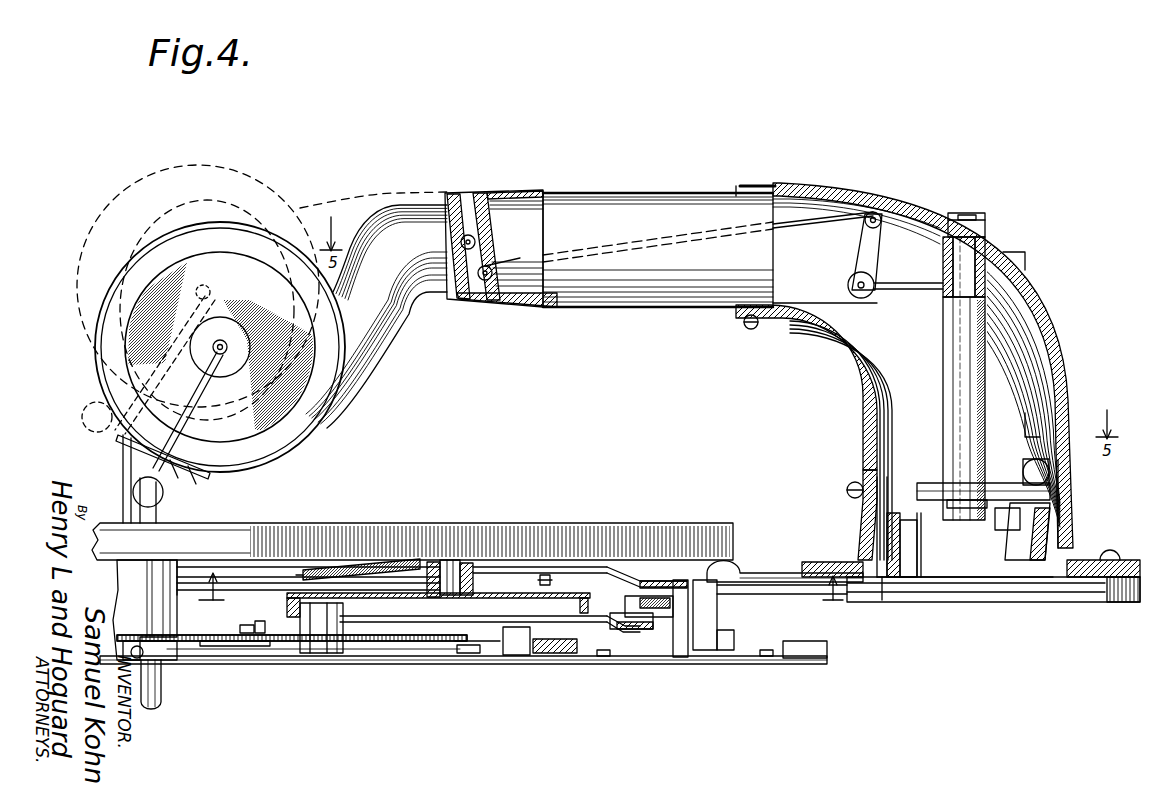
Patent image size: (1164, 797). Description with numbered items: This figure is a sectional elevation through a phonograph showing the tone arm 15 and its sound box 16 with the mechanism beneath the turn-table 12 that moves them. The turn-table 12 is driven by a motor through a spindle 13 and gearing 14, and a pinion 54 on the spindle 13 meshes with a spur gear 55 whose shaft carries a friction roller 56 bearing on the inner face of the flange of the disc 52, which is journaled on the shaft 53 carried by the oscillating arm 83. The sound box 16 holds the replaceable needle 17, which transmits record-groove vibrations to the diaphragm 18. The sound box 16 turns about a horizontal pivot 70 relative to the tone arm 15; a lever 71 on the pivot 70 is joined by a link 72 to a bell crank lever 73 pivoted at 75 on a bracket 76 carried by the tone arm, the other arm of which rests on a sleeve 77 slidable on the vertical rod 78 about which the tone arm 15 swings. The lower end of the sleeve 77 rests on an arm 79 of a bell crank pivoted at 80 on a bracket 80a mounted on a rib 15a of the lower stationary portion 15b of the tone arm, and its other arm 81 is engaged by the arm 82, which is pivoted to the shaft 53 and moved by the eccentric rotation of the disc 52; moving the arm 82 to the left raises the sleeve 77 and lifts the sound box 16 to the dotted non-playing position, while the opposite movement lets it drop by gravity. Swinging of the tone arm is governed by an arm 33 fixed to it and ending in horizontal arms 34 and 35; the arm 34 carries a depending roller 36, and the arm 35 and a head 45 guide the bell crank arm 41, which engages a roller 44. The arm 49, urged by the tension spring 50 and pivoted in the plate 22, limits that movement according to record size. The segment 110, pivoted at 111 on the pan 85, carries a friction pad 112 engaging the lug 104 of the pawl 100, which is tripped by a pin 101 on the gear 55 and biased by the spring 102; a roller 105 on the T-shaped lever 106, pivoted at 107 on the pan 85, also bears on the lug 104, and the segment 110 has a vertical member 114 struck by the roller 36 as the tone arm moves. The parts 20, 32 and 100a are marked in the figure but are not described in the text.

The turn-table 12 is at (690, 523).
The spindle 13 is at (161, 692).
The gearing 14 is at (375, 355).
The tone arm 15 is at (700, 203).
The rib 15a is at (1015, 568).
The lower stationary portion of the tone arm 15b is at (858, 540).
The sound box 16 is at (286, 237).
The needle 17 is at (140, 500).
The diaphragm 18 is at (222, 265).
The section line 20 is at (521, 597).
The plate 22 is at (770, 573).
The rod 32 is at (215, 565).
The arm 33 is at (919, 580).
The horizontally disposed arm 34 is at (790, 594).
The horizontally disposed arm 35 is at (887, 560).
The pin or roller 36 is at (717, 625).
The arm of bell crank lever 41 is at (910, 580).
The pin or roller 44 is at (893, 580).
The head 45 is at (882, 600).
The arm 49 is at (290, 593).
The tension spring 50 is at (360, 565).
The disc 52 is at (575, 576).
The shaft 53 is at (450, 560).
The pinion 54 is at (160, 648).
The spur gear 55 is at (235, 646).
The friction roller 56 is at (343, 640).
The horizontal pivot 70 is at (468, 235).
The lever 71 is at (488, 268).
The link 72 is at (800, 227).
The bell crank lever 73 is at (870, 262).
The pivot 75 is at (872, 294).
The bracket 76 is at (815, 300).
The sleeve 77 is at (975, 337).
The vertical rod 78 is at (967, 270).
The arm of bell crank lever 79 is at (1012, 470).
The pivot 80 is at (1049, 473).
The bracket 80a is at (1025, 535).
The arm of bell crank lever 81 is at (1072, 520).
The arm 82 is at (990, 595).
The arm 83 is at (434, 562).
The pan 85 is at (650, 665).
The pawl 100 is at (473, 625).
The lug 100a is at (240, 629).
The pin 101 is at (262, 620).
The spring 102 is at (665, 617).
The depending lug 104 is at (505, 655).
The roller 105 is at (548, 653).
The T shaped lever 106 is at (465, 653).
The pivot 107 is at (455, 641).
The segment 110 is at (603, 656).
The pivot 111 is at (823, 645).
The friction pad 112 is at (610, 625).
The vertically extending member 114 is at (734, 637).